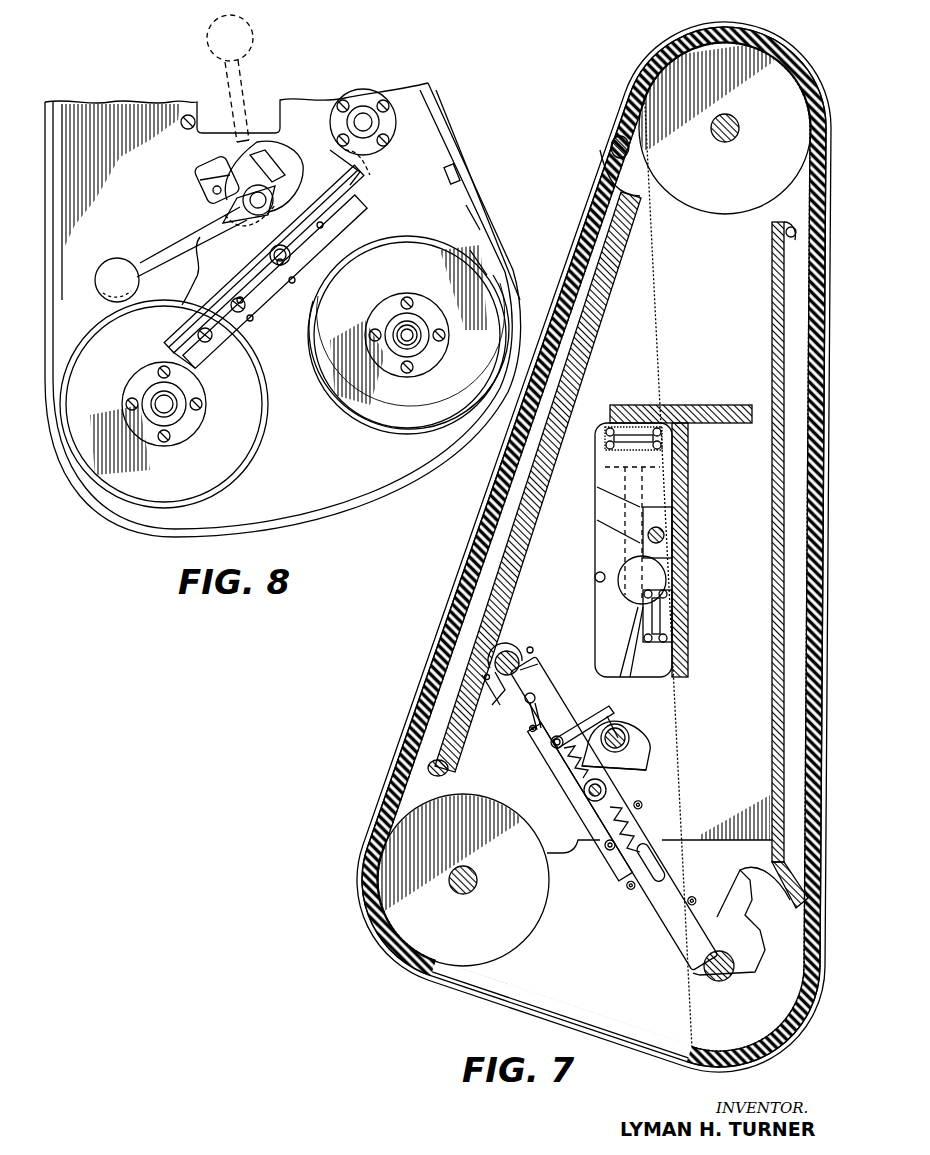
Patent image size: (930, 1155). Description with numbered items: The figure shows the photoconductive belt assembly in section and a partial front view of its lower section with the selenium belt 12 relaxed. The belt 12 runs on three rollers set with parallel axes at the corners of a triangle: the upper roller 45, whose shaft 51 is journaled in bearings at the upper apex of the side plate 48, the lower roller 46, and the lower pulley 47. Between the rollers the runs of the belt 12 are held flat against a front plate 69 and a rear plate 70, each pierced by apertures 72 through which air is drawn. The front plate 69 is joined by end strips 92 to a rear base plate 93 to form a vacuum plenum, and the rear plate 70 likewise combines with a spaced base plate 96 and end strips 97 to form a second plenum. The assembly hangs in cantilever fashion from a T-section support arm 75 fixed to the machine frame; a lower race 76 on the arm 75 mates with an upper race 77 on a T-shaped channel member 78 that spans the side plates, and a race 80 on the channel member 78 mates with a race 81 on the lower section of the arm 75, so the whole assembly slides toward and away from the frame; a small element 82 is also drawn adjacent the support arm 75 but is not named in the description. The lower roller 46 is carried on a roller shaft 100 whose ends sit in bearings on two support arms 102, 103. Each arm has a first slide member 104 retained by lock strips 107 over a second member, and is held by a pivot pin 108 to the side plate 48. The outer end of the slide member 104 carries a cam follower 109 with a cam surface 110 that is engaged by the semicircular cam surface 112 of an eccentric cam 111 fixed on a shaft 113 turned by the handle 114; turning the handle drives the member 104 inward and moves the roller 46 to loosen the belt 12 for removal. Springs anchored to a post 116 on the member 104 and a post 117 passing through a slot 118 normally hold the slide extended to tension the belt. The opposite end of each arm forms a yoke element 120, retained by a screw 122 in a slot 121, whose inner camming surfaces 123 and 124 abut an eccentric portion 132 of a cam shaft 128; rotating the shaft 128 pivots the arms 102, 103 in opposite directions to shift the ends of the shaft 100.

In FIG. 8, the selenium belt 12 is at (408, 480).
In FIG. 7, the selenium belt 12 is at (832, 158).
In FIG. 7, the upper roller 45 is at (720, 236).
In FIG. 8, the lower roller 46 is at (230, 478).
In FIG. 7, the lower roller 46 is at (625, 1004).
In FIG. 8, the lower pulley 47 is at (350, 423).
In FIG. 7, the lower pulley 47 is at (523, 972).
In FIG. 8, the side plate 48 is at (470, 225).
In FIG. 7, the shaft 51 is at (740, 130).
In FIG. 7, the flat front plate 69 is at (831, 258).
In FIG. 7, the rear flat plate 70 is at (590, 208).
In FIG. 7, the apertures 72 is at (829, 372).
In FIG. 7, the support arm 75 is at (612, 556).
In FIG. 7, the lower race 76 is at (665, 448).
In FIG. 7, the upper race 77 is at (600, 425).
In FIG. 7, the T shaped channel member 78 is at (694, 392).
In FIG. 7, the race 80 is at (680, 578).
In FIG. 7, the race 81 is at (648, 645).
In FIG. 7, the pin 82 is at (595, 577).
In FIG. 7, the end strips 92 is at (772, 238).
In FIG. 7, the rear base plate 93 is at (770, 362).
In FIG. 7, the base plate 96 is at (605, 320).
In FIG. 7, the end strips 97 is at (608, 152).
In FIG. 8, the roller shaft 100 is at (175, 410).
In FIG. 7, the roller shaft 100 is at (730, 978).
In FIG. 8, the support arm 102 is at (272, 312).
In FIG. 7, the support arm 103 is at (630, 878).
In FIG. 7, the first slide member 104 is at (718, 880).
In FIG. 8, the lock strips 107 is at (183, 341).
In FIG. 8, the pivot pin 108 is at (290, 262).
In FIG. 7, the pivot pin 108 is at (607, 790).
In FIG. 8, the cam follower 109 is at (360, 180).
In FIG. 7, the cam follower 109 is at (612, 712).
In FIG. 8, the cam surface 110 is at (292, 145).
In FIG. 7, the cam surface 110 is at (598, 712).
In FIG. 8, the cam 111 is at (203, 178).
In FIG. 7, the cam 111 is at (640, 770).
In FIG. 8, the semicircular cam surface 112 is at (245, 148).
In FIG. 7, the semicircular cam surface 112 is at (636, 732).
In FIG. 8, the shaft 113 is at (245, 215).
In FIG. 7, the shaft 113 is at (630, 742).
In FIG. 8, the handle 114 is at (97, 223).
In FIG. 7, the post 116 is at (550, 757).
In FIG. 7, the post 117 is at (650, 832).
In FIG. 7, the slot 118 is at (665, 862).
In FIG. 7, the yoke element 120 is at (520, 662).
In FIG. 7, the slot 121 is at (528, 710).
In FIG. 7, the screw 122 is at (528, 730).
In FIG. 7, the camming surface 123 is at (490, 695).
In FIG. 7, the camming surface 124 is at (530, 645).
In FIG. 8, the cam shaft 128 is at (362, 112).
In FIG. 7, the eccentric portion 132 is at (528, 672).